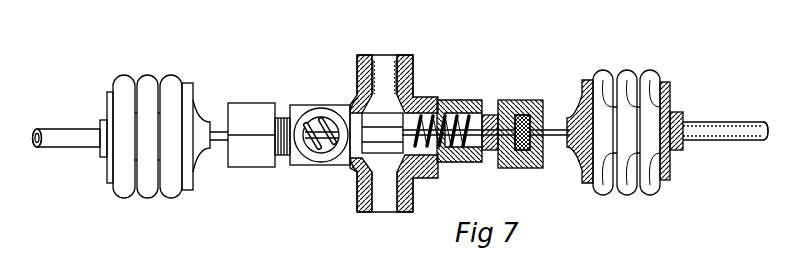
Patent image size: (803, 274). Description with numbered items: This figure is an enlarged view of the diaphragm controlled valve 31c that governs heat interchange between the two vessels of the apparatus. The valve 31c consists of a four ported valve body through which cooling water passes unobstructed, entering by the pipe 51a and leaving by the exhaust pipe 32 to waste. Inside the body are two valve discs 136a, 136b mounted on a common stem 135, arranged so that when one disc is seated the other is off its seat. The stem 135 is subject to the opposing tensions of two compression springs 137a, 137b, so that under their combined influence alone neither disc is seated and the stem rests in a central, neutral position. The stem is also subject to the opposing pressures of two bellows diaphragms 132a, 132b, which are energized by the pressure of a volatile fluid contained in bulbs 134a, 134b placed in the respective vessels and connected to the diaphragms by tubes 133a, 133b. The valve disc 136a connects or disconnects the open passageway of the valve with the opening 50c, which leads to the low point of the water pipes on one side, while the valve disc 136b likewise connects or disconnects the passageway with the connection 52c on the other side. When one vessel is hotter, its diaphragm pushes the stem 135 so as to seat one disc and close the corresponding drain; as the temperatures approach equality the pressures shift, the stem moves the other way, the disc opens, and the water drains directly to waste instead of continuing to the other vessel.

The tube 133a is at (52, 129).
The bulb 134a is at (33, 138).
The bellows diaphragm 132a is at (147, 200).
The opening 50c is at (302, 134).
The compression spring 137a is at (315, 118).
The valve disc 136a is at (355, 158).
The exhaust pipe 32 is at (405, 137).
The pipe 51a is at (385, 55).
The diaphragm controlled valve 31c is at (412, 67).
The valve disc 136b is at (403, 153).
The stem 135 is at (372, 132).
The connection 52c is at (442, 162).
The compression spring 137b is at (447, 110).
The bellows diaphragm 132b is at (627, 195).
The tube 133b is at (707, 123).
The bulb 134b is at (767, 129).